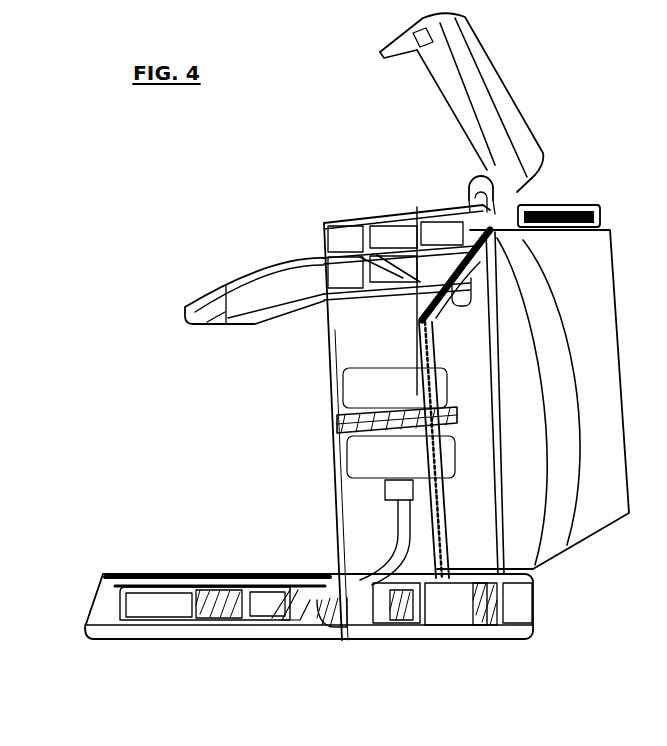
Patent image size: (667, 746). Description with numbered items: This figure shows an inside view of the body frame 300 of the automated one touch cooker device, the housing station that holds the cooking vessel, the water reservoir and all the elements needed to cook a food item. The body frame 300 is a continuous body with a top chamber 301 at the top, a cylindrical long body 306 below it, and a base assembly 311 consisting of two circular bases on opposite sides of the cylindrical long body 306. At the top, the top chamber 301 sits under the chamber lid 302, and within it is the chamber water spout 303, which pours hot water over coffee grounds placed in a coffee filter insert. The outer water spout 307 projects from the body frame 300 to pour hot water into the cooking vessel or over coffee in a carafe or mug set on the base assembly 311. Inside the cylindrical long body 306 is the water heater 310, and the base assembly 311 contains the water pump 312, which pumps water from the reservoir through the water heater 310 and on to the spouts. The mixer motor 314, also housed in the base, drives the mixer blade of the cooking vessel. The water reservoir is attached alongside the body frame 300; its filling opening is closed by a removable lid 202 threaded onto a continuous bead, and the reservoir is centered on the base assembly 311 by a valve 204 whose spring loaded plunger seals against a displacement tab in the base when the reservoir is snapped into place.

The removable lid 202 is at (577, 197).
The valve 204 is at (534, 565).
The body frame 300 is at (360, 406).
The top chamber 301 is at (383, 209).
The chamber lid 302 is at (503, 66).
The chamber water spout 303 is at (461, 178).
The cylindrical long body 306 is at (330, 352).
The outer water spout 307 is at (242, 271).
The water heater 310 is at (357, 405).
The base assembly 311 is at (412, 645).
The water pump 312 is at (457, 602).
The mixer motor 314 is at (181, 603).